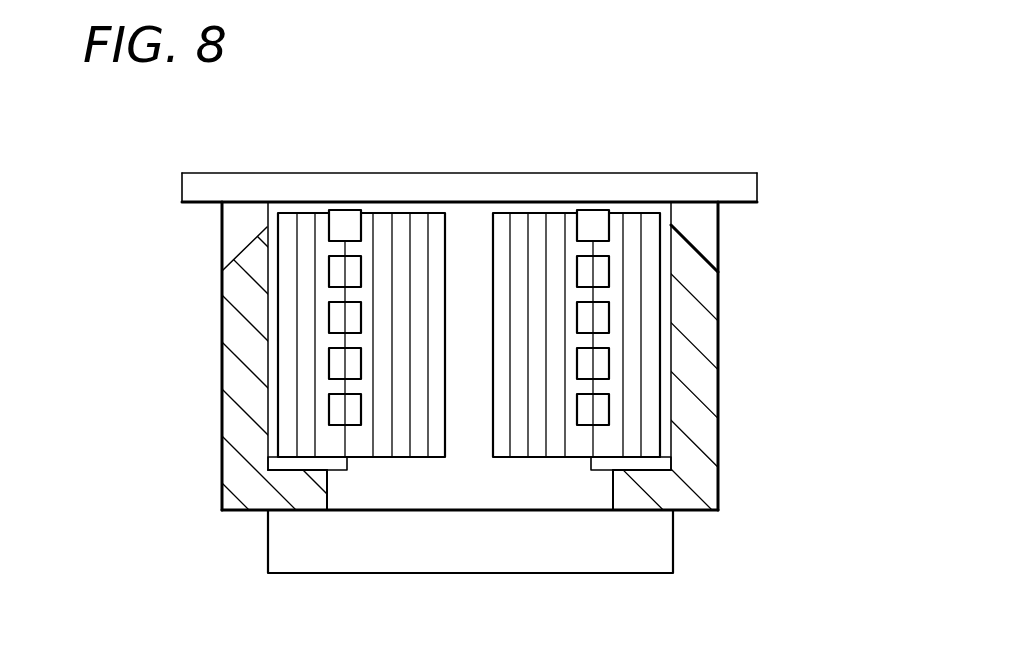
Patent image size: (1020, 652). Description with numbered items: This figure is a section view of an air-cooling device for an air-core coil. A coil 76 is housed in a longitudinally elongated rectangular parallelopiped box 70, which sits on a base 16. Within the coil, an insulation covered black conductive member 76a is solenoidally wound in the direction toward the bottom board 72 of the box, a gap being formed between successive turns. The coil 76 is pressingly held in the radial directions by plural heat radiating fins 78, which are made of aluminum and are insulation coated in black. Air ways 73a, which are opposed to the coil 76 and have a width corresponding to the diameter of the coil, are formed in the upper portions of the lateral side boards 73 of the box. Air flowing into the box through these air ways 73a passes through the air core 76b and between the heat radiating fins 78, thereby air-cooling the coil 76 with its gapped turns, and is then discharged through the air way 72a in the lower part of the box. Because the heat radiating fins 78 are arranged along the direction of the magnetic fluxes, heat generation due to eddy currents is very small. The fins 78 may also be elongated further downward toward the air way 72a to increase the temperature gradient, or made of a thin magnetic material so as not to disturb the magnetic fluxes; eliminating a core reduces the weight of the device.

The base 16 is at (408, 575).
The box 70 is at (510, 367).
The bottom board 72 is at (243, 512).
The air way 72a is at (612, 493).
The lateral side board 73 is at (718, 374).
The air way 73a is at (718, 245).
The coil 76 is at (469, 283).
The conductive member 76a is at (577, 270).
The air core 76b is at (477, 245).
The heat radiating fin 78 is at (643, 427).